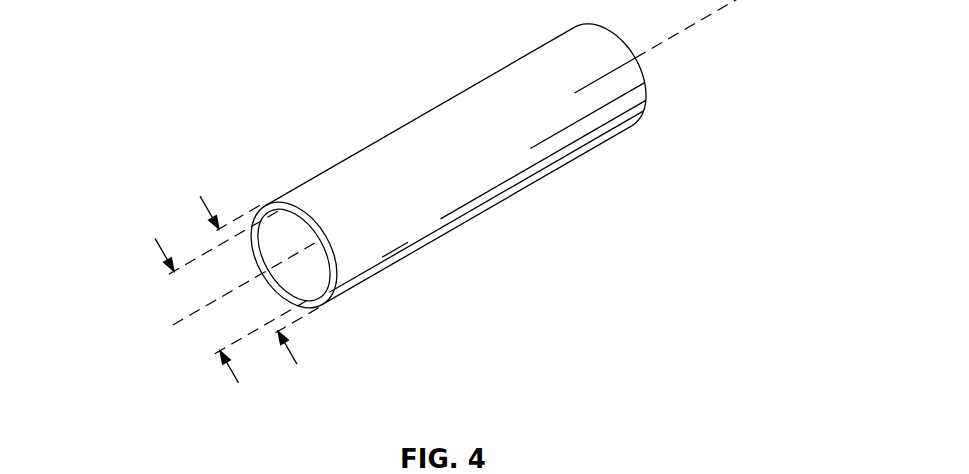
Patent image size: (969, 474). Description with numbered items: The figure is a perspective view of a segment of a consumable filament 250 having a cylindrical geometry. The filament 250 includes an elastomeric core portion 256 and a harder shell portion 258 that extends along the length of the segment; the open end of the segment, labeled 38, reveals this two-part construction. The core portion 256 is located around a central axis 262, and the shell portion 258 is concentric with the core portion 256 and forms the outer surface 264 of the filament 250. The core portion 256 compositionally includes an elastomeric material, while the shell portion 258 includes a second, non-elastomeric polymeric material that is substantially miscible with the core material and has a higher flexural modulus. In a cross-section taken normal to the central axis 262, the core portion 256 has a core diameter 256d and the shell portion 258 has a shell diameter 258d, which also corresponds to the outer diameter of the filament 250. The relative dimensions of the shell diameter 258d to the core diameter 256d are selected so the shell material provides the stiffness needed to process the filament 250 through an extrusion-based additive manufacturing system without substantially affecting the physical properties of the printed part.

The filament 250 is at (136, 38).
The lumen / open end 38 is at (271, 203).
The core portion 256 is at (299, 296).
The core diameter 256d is at (158, 244).
The shell portion 258 is at (577, 145).
The shell diameter 258d is at (289, 348).
The central axis 262 is at (172, 322).
The outer surface 264 is at (405, 235).